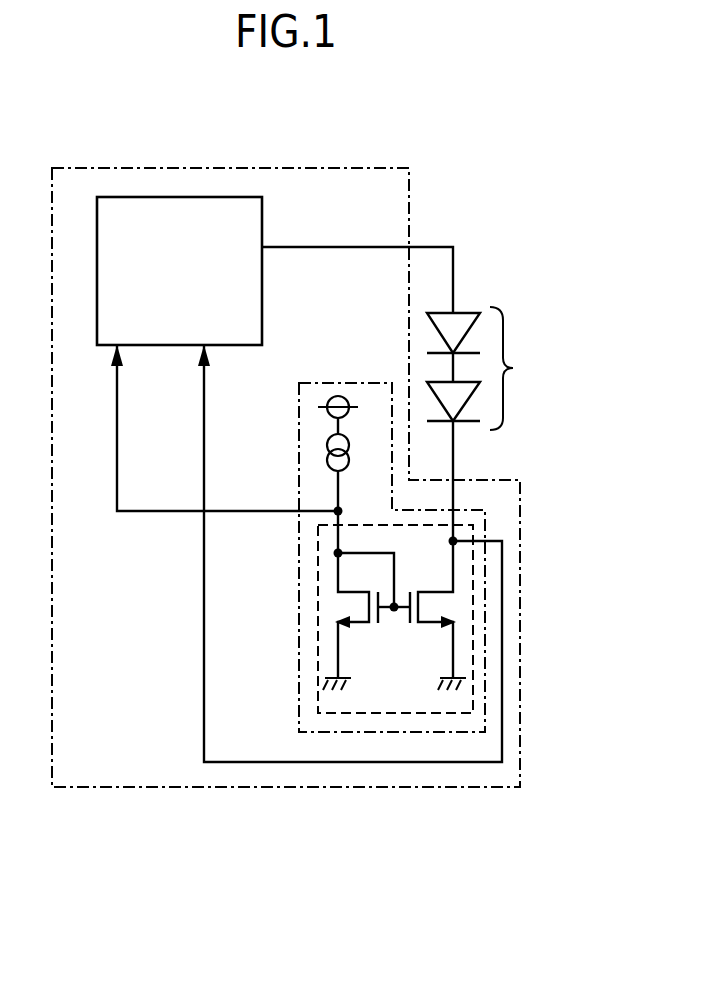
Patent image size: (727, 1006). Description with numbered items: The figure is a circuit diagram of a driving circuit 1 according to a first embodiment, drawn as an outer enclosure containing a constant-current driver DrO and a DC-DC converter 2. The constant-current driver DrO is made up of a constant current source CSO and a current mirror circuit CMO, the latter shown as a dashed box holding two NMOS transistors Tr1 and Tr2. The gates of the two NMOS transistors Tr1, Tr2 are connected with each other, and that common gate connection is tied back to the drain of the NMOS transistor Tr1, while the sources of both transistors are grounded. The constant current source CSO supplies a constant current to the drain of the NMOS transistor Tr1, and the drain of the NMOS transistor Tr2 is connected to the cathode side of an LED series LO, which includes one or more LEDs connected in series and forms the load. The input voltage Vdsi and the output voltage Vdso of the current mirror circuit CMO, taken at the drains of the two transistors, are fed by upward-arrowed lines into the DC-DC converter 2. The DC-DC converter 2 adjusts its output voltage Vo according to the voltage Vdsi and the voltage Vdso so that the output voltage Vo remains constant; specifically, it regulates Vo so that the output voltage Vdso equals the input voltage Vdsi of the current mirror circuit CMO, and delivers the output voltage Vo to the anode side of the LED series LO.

The driving circuit 1 is at (523, 698).
The DC-DC converter 2 is at (97, 322).
The output voltage Vo is at (357, 263).
The LED series LO is at (491, 424).
The input voltage Vdsi is at (224, 428).
The output voltage Vdso is at (350, 553).
The constant-current driver DrO is at (299, 677).
The constant current source CSO is at (327, 449).
The current mirror circuit CMO is at (318, 573).
The NMOS transistor Tr1 is at (351, 621).
The NMOS transistor Tr2 is at (436, 615).